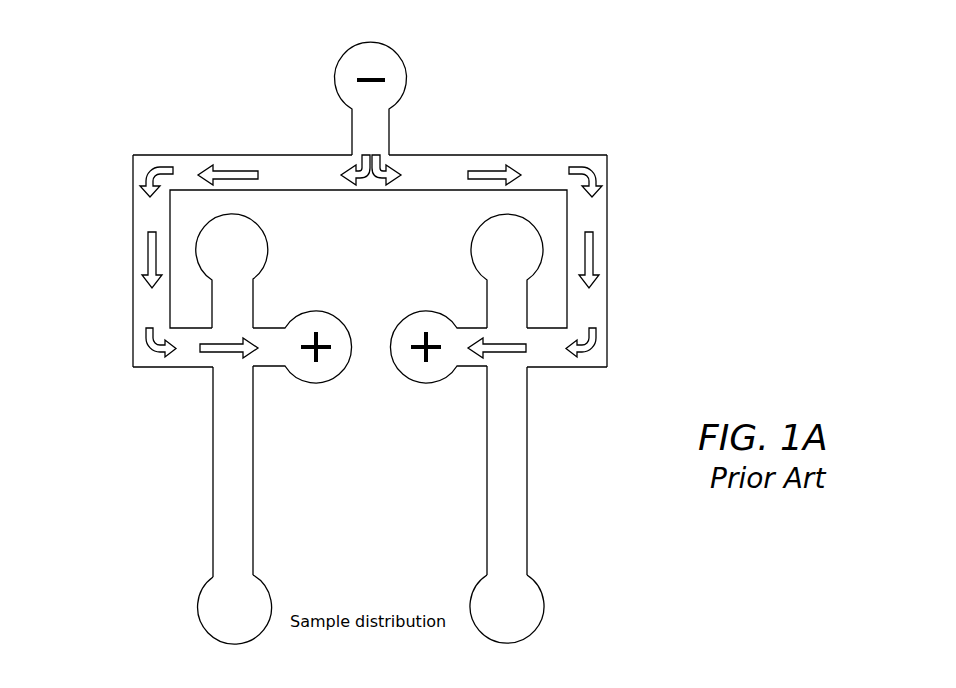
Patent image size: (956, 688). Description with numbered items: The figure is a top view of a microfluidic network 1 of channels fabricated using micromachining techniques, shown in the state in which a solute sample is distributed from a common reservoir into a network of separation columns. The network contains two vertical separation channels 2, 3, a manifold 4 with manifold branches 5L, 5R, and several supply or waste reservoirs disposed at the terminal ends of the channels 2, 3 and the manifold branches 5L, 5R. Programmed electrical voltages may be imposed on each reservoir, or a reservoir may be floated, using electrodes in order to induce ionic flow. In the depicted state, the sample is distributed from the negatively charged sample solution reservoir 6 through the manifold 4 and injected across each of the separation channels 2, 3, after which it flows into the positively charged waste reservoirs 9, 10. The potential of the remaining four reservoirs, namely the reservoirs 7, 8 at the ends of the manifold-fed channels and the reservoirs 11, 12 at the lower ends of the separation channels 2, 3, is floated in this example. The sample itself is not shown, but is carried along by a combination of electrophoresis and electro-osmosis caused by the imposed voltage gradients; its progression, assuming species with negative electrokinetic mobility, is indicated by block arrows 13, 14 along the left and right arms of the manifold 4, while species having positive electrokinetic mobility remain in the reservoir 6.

The microfluidic network 1 is at (322, 41).
The separation channel 2 is at (255, 502).
The separation channel 3 is at (527, 502).
The manifold 4 is at (590, 138).
The manifold branch 5L is at (133, 318).
The manifold branch 5R is at (607, 276).
The sample solution reservoir 6 is at (410, 78).
The reservoir 7 is at (268, 240).
The reservoir 8 is at (471, 242).
The waste reservoir 9 is at (313, 382).
The waste reservoir 10 is at (422, 312).
The reservoir 11 is at (268, 593).
The reservoir 12 is at (538, 593).
The block arrow 13 is at (237, 168).
The block arrow 14 is at (513, 173).